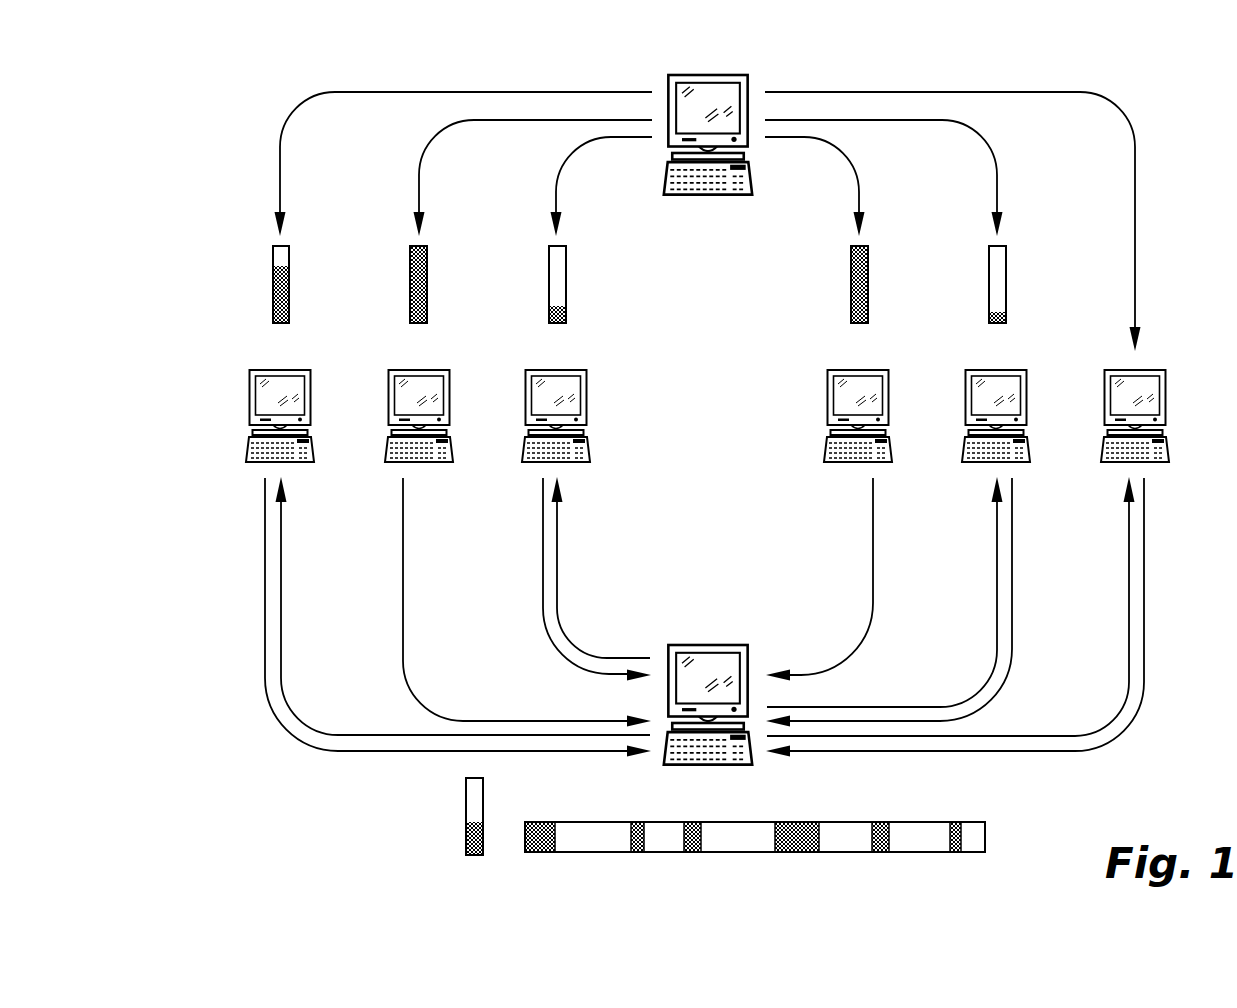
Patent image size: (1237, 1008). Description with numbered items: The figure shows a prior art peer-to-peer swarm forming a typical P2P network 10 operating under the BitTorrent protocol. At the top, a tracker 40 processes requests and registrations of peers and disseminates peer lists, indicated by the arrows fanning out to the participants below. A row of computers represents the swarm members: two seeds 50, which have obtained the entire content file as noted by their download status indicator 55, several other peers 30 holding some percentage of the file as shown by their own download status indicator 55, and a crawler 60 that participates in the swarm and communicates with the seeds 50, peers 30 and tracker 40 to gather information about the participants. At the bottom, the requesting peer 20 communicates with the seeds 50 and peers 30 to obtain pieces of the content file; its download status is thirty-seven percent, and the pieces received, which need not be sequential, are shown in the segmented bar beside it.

The P2P network 10 is at (219, 114).
The requesting peer 20 is at (671, 646).
The peer 30 is at (599, 415).
The tracker 40 is at (750, 88).
The seed 50 is at (610, 415).
The download status indicator 55 is at (607, 302).
The crawler 60 is at (1168, 432).